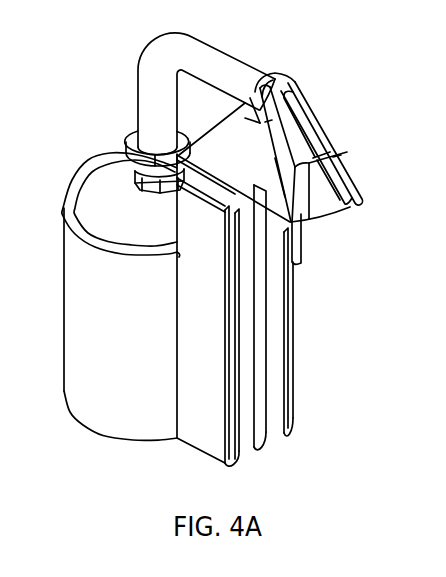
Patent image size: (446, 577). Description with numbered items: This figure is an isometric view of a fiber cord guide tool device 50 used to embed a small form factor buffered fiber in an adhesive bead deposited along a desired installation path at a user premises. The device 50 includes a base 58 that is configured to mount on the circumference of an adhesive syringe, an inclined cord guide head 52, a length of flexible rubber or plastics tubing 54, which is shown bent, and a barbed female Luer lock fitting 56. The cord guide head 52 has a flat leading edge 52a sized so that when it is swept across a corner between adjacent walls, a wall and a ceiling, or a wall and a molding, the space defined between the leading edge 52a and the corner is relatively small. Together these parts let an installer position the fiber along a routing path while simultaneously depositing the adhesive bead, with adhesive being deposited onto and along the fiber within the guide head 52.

The fiber cord guide tool device 50 is at (72, 120).
The inclined cord guide head 52 is at (312, 108).
The flat leading edge 52a is at (282, 81).
The flexible tubing 54 is at (232, 56).
The barbed female Luer lock fitting 56 is at (127, 134).
The base 58 is at (194, 441).